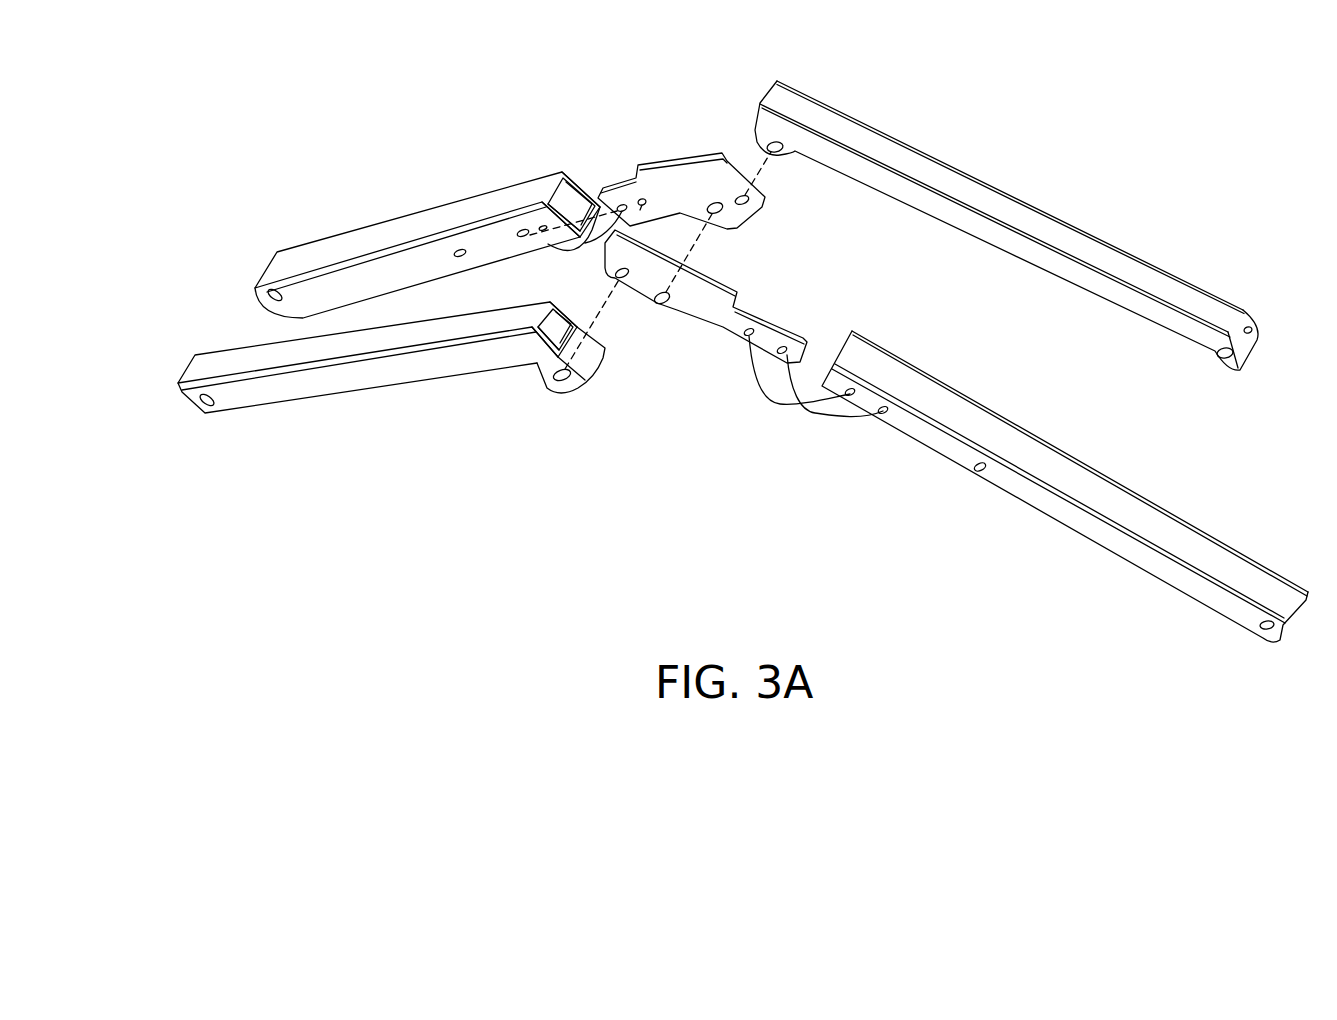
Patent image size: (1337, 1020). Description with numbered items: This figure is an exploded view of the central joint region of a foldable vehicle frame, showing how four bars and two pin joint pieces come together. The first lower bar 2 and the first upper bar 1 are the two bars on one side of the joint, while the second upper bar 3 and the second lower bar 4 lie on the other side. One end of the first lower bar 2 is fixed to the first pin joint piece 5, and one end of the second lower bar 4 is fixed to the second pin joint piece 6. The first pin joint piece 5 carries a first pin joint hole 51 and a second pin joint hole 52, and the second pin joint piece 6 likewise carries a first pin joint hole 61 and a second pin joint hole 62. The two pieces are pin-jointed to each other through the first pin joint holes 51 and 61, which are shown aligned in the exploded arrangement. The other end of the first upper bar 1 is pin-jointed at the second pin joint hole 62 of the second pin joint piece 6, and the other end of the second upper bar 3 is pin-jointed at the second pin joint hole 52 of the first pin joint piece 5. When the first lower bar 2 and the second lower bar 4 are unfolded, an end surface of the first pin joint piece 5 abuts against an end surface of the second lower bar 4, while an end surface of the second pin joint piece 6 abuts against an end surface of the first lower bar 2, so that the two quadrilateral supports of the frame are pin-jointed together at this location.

The first upper bar 1 is at (492, 373).
The first lower bar 2 is at (522, 182).
The second upper bar 3 is at (809, 91).
The second lower bar 4 is at (917, 443).
The first pin joint piece 5 is at (675, 149).
The first pin joint hole 51 is at (715, 200).
The second pin joint hole 52 is at (742, 193).
The second pin joint piece 6 is at (744, 328).
The first pin joint hole 61 is at (661, 307).
The second pin joint hole 62 is at (623, 283).